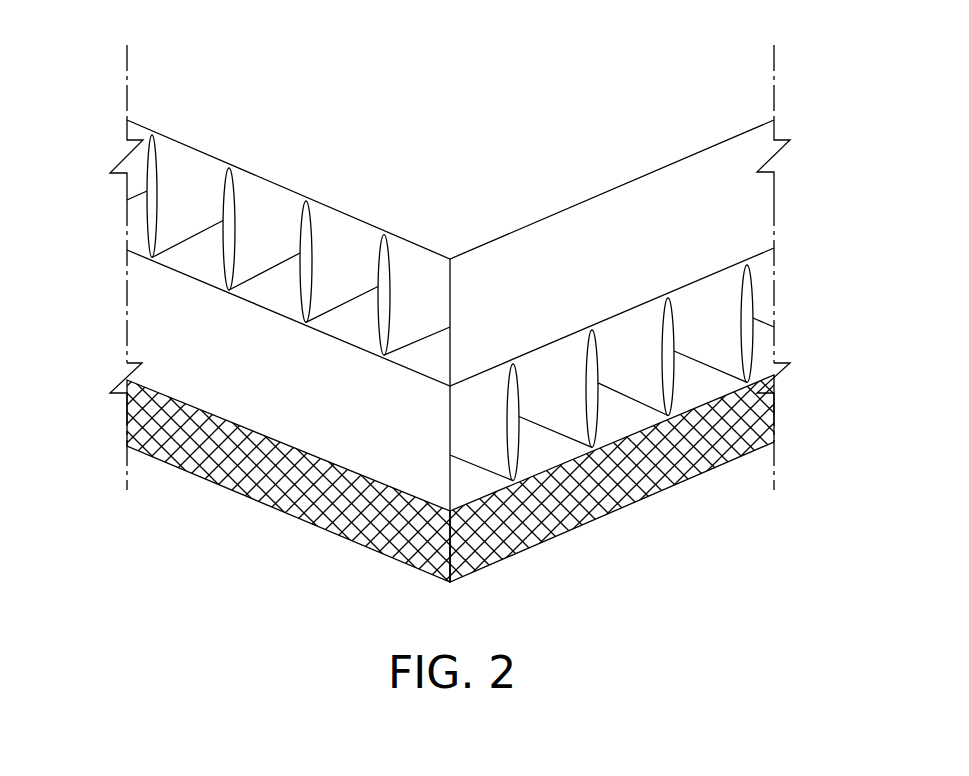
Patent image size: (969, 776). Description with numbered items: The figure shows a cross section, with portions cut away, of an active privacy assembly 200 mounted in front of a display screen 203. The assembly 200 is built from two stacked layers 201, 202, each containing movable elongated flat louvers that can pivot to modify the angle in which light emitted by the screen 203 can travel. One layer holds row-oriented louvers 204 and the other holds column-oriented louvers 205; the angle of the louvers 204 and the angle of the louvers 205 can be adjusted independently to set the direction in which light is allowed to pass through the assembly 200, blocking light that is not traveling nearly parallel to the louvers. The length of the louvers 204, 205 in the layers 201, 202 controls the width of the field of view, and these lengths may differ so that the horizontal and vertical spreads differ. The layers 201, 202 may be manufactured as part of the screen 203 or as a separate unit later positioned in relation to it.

The active privacy assembly 200 is at (490, 484).
The stacked louver layer 201 is at (133, 230).
The stacked louver layer 202 is at (135, 338).
The display screen 203 is at (135, 428).
The row-oriented louvers 204 is at (228, 254).
The column-oriented louvers 205 is at (672, 326).